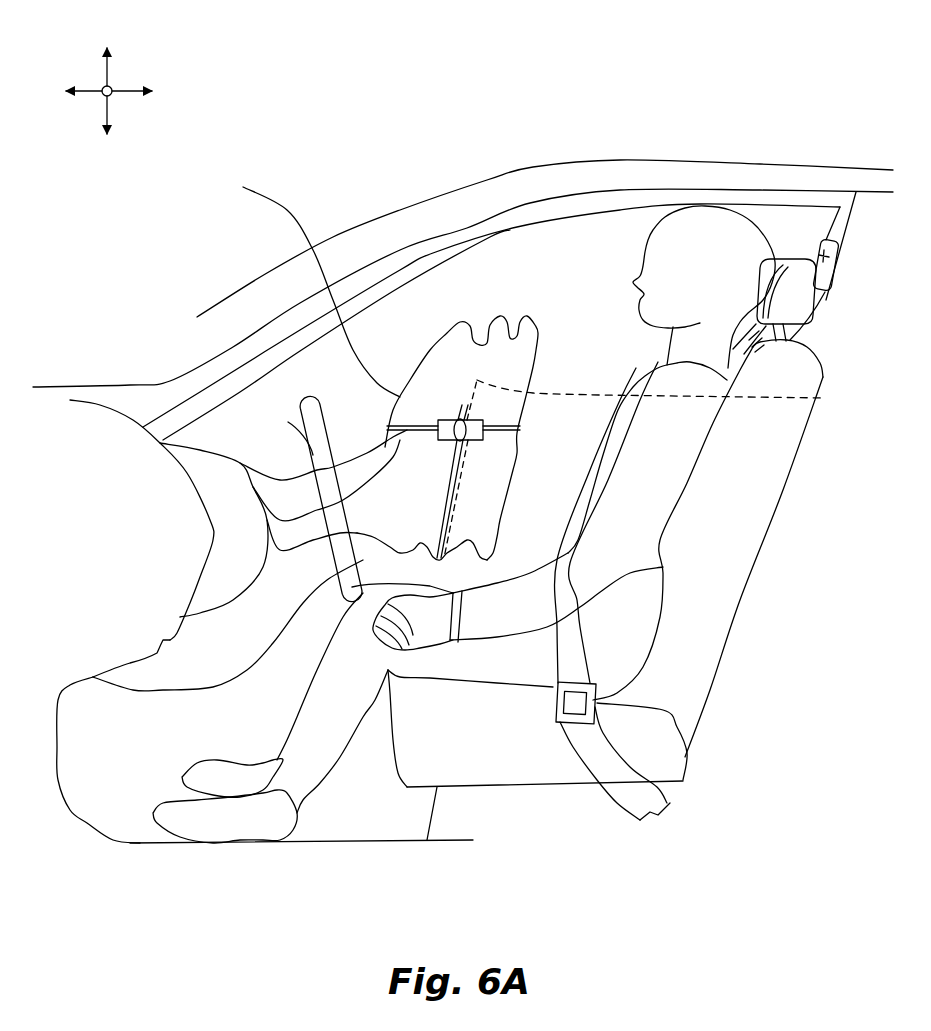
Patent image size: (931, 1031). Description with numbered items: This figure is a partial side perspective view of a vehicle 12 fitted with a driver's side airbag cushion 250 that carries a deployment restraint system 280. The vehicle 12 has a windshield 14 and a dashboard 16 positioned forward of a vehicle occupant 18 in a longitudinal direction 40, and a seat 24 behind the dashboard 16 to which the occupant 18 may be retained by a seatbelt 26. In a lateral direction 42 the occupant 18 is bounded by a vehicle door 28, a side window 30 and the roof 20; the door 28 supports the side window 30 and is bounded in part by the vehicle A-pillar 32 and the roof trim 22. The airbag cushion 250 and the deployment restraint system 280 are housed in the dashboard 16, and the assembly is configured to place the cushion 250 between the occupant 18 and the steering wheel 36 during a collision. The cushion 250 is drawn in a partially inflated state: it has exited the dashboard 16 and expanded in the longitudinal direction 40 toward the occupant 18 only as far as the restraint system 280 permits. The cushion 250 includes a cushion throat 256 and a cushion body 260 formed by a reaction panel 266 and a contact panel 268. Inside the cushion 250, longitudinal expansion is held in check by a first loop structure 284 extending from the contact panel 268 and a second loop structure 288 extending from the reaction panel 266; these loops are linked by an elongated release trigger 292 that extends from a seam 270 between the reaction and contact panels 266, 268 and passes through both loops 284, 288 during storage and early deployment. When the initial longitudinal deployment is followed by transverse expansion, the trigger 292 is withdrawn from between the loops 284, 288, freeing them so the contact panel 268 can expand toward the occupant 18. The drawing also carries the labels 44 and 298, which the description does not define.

The vehicle 12 is at (730, 100).
The windshield 14 is at (197, 317).
The dashboard 16 is at (117, 467).
The vehicle occupant 18 is at (689, 432).
The roof 20 is at (737, 173).
The roof trim 22 is at (816, 188).
The seat 24 is at (773, 450).
The seatbelt 26 is at (593, 478).
The vehicle door 28 is at (676, 190).
The side window 30 is at (620, 245).
The vehicle A-pillar 32 is at (515, 192).
The steering wheel 36 is at (385, 447).
The longitudinal direction 40 is at (125, 88).
The lateral direction 42 is at (110, 98).
The upward direction 44 is at (110, 68).
The airbag cushion 250 is at (408, 318).
The cushion throat 256 is at (372, 478).
The cushion body 260 is at (483, 347).
The reaction panel 266 is at (93, 677).
The contact panel 268 is at (517, 485).
The seam 270 is at (825, 398).
The deployment restraint system 280 is at (446, 401).
The first loop structure 284 is at (447, 503).
The second loop structure 288 is at (213, 528).
The release trigger 292 is at (663, 623).
The airbag movement direction 298 is at (438, 462).